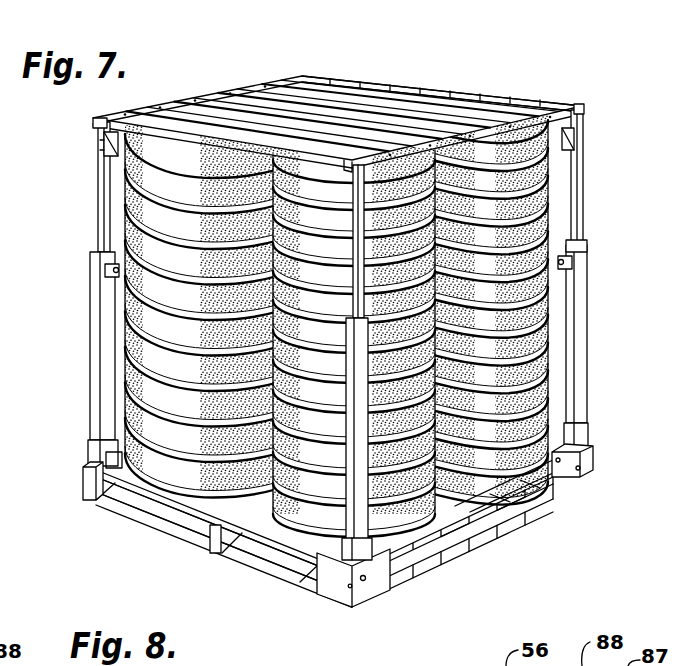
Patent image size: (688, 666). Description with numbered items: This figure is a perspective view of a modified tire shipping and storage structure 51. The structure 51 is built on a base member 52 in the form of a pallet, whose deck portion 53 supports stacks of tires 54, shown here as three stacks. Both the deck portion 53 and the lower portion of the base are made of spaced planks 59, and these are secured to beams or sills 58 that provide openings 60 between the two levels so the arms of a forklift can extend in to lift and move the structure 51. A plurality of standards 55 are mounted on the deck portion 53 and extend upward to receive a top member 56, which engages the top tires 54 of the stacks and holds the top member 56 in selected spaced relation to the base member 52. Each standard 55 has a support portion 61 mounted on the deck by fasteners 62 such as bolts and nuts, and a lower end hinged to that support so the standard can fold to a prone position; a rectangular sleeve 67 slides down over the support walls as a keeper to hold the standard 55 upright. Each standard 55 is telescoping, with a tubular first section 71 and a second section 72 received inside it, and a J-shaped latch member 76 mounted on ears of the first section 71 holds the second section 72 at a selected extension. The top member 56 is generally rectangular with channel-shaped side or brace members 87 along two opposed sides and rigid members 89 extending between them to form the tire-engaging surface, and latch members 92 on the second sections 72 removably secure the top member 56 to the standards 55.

The tire shipping and storage structure 51 is at (488, 77).
The base member 52 is at (364, 600).
The deck portion 53 is at (283, 558).
The tires 54 is at (548, 214).
The standards 55 is at (90, 312).
The top member 56 is at (510, 100).
The beams or sills 58 is at (82, 495).
The planks 59 is at (153, 510).
The openings 60 is at (305, 582).
The support portion 61 is at (349, 588).
The fasteners 62 is at (365, 581).
The sleeve 67 is at (88, 450).
The first section 71 is at (588, 240).
The second section 72 is at (583, 162).
The latch member 76 is at (574, 263).
The side or brace members 87 is at (93, 121).
The rigid members 89 is at (337, 114).
The latch members 92 is at (101, 160).